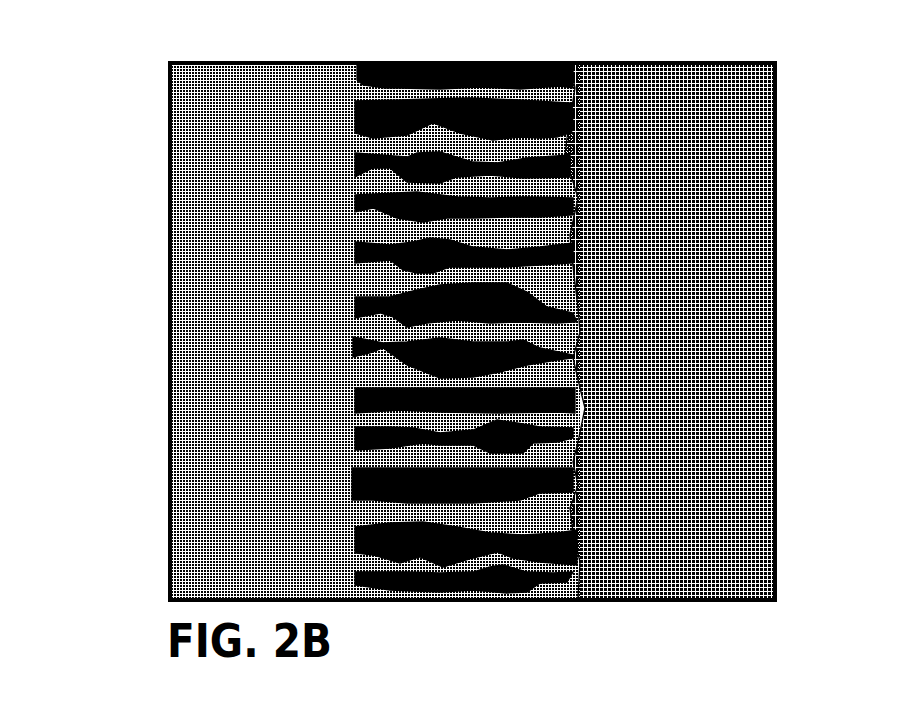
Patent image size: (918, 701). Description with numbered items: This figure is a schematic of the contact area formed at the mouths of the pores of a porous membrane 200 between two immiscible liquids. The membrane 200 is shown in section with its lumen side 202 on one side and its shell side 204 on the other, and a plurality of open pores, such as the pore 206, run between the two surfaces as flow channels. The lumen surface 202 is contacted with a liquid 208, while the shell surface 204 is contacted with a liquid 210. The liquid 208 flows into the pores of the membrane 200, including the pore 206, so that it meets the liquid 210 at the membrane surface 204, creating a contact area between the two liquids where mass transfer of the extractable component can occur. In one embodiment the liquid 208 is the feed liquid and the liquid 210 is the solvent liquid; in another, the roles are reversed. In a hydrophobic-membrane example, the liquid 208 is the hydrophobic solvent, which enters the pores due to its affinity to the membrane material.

The porous membrane 200 is at (477, 62).
The lumen side 202 is at (353, 72).
The shell side 204 is at (570, 70).
The pore 206 is at (560, 507).
The liquid 208 is at (192, 148).
The liquid 210 is at (777, 137).